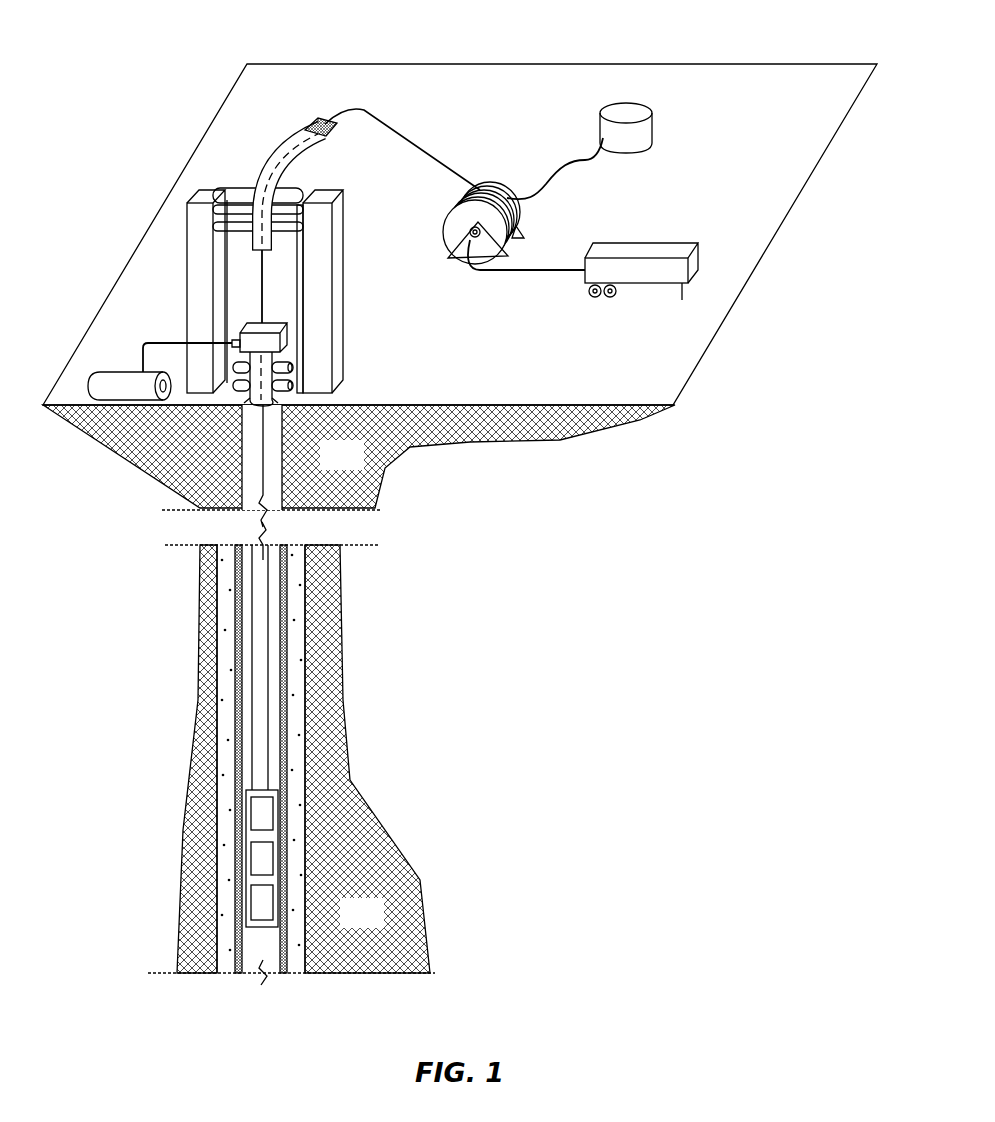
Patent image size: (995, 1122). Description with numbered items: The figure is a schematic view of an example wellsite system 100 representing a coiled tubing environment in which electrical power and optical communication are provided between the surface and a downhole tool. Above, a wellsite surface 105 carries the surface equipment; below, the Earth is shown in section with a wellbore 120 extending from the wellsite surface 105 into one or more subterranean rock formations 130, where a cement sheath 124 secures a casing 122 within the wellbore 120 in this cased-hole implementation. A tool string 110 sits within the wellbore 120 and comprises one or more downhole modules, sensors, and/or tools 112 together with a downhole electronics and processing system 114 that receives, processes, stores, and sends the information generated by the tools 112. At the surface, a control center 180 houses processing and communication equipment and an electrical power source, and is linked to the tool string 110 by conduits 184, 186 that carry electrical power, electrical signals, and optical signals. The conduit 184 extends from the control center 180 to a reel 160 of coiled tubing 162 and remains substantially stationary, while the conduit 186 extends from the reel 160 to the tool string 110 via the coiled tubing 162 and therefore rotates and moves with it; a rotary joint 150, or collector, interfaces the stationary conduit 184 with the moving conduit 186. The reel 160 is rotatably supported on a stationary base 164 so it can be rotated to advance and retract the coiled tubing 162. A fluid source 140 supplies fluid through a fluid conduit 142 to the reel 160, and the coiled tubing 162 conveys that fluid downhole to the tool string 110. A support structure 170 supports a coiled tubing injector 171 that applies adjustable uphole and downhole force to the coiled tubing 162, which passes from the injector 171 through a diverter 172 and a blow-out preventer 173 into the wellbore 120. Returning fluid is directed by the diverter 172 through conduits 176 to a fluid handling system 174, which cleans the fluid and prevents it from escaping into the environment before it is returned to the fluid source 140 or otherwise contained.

The wellsite system 100 is at (126, 45).
The wellsite surface 105 is at (570, 376).
The tool string 110 is at (245, 808).
The downhole modules, sensors, and/or tools 112 is at (250, 855).
The downhole electronics and processing (DEP) system 114 is at (272, 812).
The wellbore 120 is at (247, 427).
The casing 122 is at (287, 648).
The cement sheath 124 is at (303, 597).
The subterranean rock formations 130 is at (360, 468).
The fluid source 140 is at (632, 110).
The fluid conduit 142 is at (572, 148).
The rotary joint 150 is at (468, 230).
The reel 160 is at (520, 218).
The coiled tubing 162 is at (364, 110).
The stationary base 164 is at (462, 252).
The support structure 170 is at (337, 295).
The coiled tubing injector 171 is at (273, 155).
The diverter 172 is at (281, 338).
The blow-out preventer (BOP) 173 is at (293, 367).
The fluid handling system 174 is at (117, 375).
The conduits 176 is at (173, 343).
The control center 180 is at (645, 240).
The conduit 184 is at (560, 273).
The conduit 186 is at (245, 695).